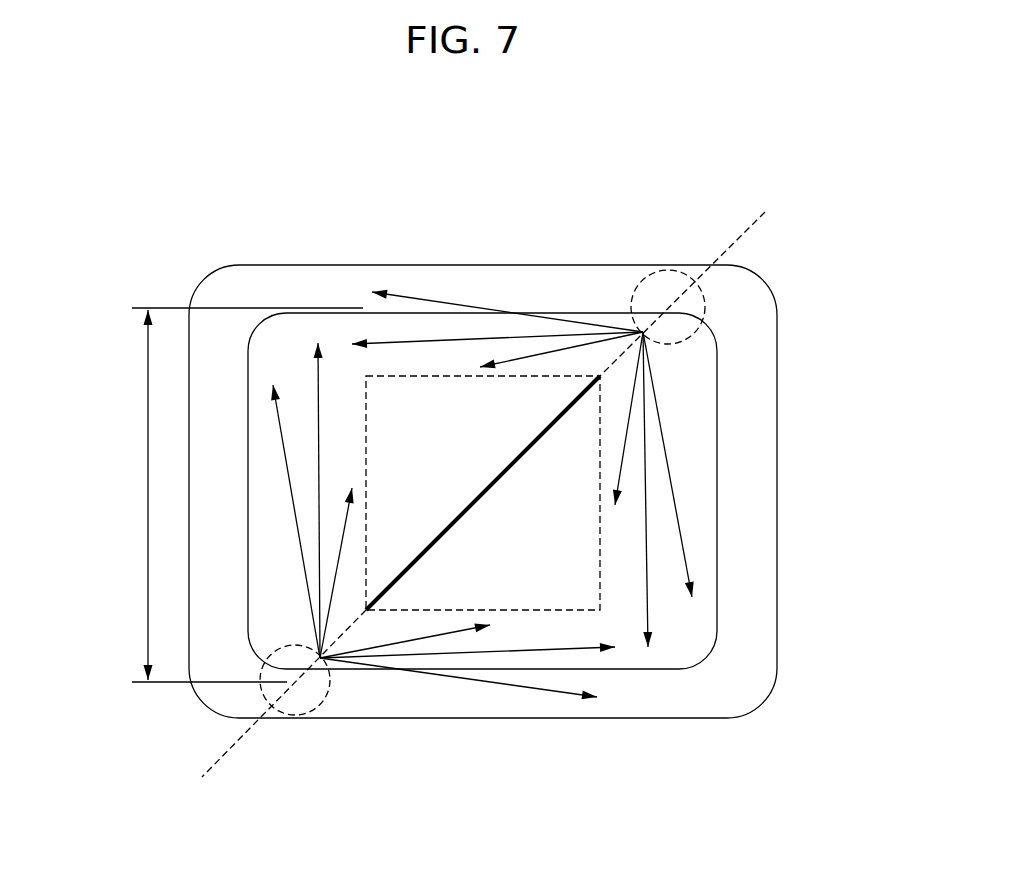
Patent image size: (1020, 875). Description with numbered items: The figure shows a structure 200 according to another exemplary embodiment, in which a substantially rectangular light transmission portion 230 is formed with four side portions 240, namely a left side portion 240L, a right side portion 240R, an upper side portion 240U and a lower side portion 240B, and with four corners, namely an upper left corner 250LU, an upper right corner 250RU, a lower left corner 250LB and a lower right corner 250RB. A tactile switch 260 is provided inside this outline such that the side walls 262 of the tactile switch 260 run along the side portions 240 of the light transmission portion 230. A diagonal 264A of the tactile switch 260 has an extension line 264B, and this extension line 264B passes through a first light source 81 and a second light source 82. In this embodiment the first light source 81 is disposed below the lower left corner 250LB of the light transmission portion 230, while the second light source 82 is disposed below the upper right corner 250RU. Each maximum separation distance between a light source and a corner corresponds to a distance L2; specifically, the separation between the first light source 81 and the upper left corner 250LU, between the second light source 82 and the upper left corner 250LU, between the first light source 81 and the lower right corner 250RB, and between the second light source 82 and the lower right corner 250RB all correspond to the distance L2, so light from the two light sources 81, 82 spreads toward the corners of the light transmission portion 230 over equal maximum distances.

The display device 200 is at (470, 451).
The light transmission portion 230 is at (501, 488).
The side portions 240 is at (470, 497).
The upper side portion 240U is at (410, 268).
The left side portion 240L is at (210, 407).
The right side portion 240R is at (740, 487).
The lower side portion 240B is at (500, 702).
The upper left corner 250LU is at (207, 267).
The upper right corner 250RU is at (767, 270).
The lower left corner 250LB is at (205, 720).
The lower right corner 250RB is at (757, 722).
The tactile switch 260 is at (440, 498).
The side walls 262 is at (455, 377).
The diagonal 264A is at (475, 503).
The extension line 264B is at (740, 213).
The first light source 81 is at (297, 700).
The second light source 82 is at (687, 300).
The distance L2 is at (237, 495).